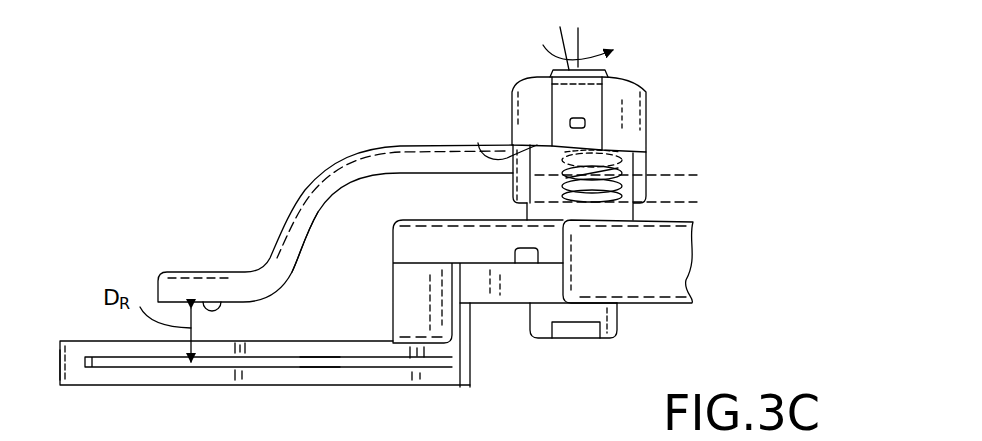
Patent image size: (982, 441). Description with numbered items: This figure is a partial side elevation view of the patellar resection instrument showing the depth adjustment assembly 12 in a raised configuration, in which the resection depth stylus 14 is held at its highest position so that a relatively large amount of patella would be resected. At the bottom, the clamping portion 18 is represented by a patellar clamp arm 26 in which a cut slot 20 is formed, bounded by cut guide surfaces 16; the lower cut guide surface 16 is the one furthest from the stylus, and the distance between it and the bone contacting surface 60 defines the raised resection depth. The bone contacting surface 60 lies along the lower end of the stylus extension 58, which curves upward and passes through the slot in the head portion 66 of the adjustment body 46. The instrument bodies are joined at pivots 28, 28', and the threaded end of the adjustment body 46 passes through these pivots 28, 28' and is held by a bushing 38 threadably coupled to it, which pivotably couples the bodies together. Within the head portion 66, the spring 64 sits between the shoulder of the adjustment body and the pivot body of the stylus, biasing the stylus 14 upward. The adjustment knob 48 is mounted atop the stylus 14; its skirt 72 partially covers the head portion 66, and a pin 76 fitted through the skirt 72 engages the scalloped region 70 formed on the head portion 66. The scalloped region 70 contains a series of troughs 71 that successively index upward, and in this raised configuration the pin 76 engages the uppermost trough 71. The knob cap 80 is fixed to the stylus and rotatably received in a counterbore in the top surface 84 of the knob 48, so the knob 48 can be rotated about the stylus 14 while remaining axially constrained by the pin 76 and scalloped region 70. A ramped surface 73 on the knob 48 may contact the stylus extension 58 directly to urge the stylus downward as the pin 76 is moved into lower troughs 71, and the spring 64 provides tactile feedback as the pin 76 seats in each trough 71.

The depth adjustment assembly 12 is at (410, 61).
The resection depth stylus 14 is at (330, 160).
The cut guide surfaces 16 is at (333, 362).
The clamping portion 18 is at (81, 318).
The cut slot 20 is at (120, 363).
The patellar clamp arm 26 is at (76, 356).
The pivot 28 is at (538, 320).
The pivot 28' is at (478, 303).
The bushing 38 is at (583, 327).
The adjustment body 46 is at (518, 210).
The adjustment knob 48 is at (511, 82).
The stylus extension 58 is at (322, 210).
The bone contacting surface 60 is at (222, 301).
The spring 64 is at (612, 182).
The head portion 66 is at (610, 213).
The scalloped region 70 is at (619, 129).
The trough 71 is at (640, 146).
The skirt 72 is at (633, 194).
The ramped surface 73 is at (478, 143).
The pin 76 is at (640, 176).
The knob cap 80 is at (575, 35).
The top surface 84 is at (542, 71).